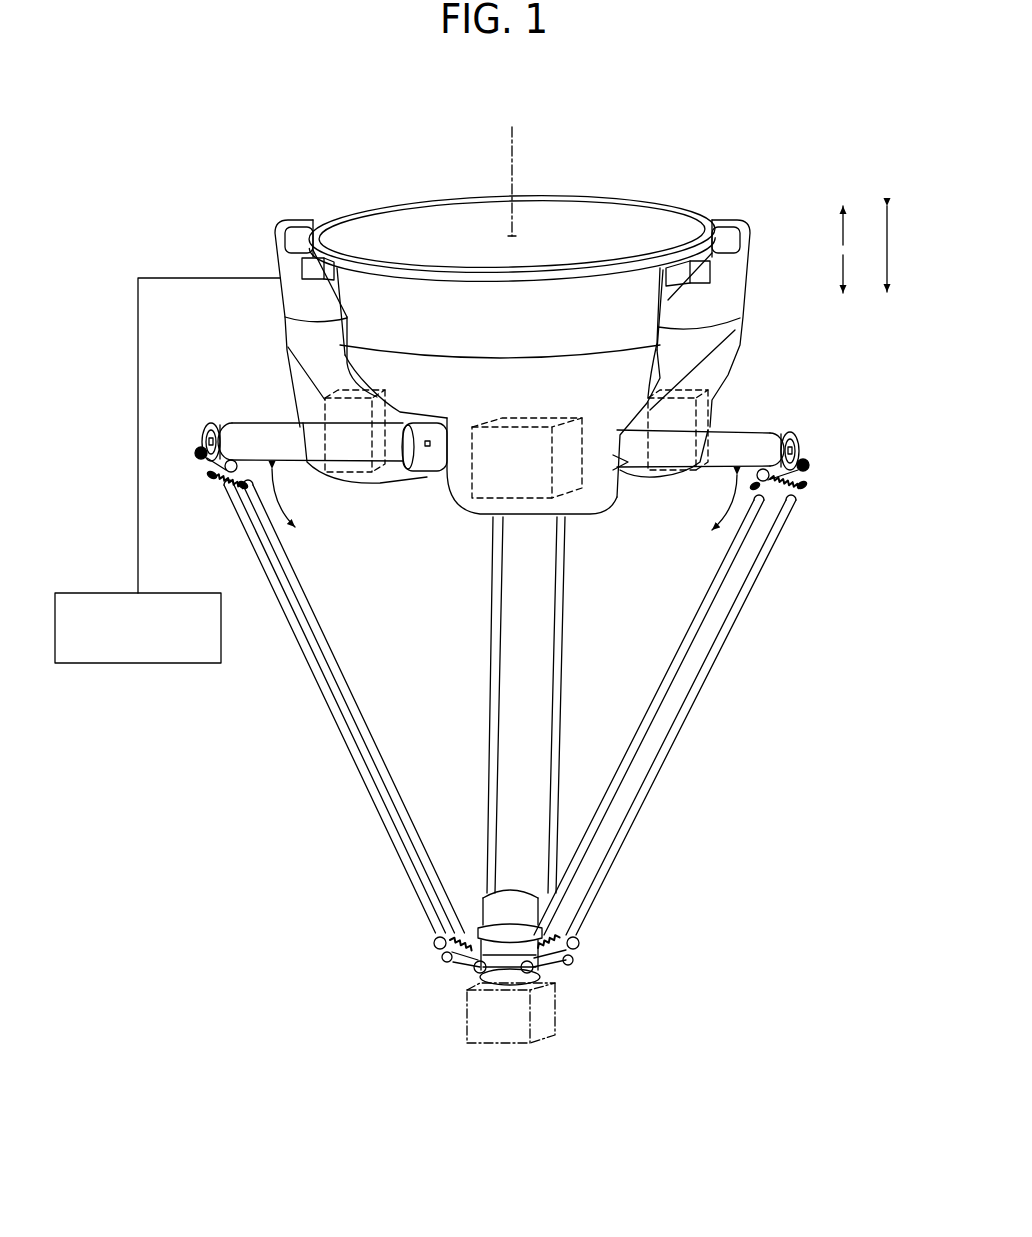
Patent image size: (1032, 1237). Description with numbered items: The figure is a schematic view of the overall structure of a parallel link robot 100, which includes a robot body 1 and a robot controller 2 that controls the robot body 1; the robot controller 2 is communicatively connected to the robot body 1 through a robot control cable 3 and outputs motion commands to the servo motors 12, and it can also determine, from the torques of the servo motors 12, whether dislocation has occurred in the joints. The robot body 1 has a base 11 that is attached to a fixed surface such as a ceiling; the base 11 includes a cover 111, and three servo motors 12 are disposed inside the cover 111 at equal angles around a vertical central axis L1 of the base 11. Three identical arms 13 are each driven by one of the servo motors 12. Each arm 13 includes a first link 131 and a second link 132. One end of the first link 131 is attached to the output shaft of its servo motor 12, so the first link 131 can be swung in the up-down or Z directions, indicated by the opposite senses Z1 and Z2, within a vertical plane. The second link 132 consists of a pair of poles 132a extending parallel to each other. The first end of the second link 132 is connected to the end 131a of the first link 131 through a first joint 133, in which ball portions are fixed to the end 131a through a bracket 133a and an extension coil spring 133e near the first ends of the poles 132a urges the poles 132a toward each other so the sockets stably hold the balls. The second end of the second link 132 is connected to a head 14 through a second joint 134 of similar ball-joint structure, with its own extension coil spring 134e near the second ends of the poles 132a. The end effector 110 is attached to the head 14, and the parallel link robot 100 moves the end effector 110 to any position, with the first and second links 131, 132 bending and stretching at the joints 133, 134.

The parallel link robot 100 is at (652, 127).
The robot body 1 is at (765, 223).
The robot controller 2 is at (131, 665).
The robot control cable 3 is at (188, 277).
The base 11 is at (467, 212).
The cover 111 is at (710, 337).
The servo motor 12 is at (352, 473).
The arm 13 is at (592, 562).
The first link 131 is at (283, 427).
The end of first link 131a is at (212, 428).
The second link 132 is at (404, 595).
The pole 132a is at (495, 589).
The first joint 133 is at (192, 469).
The bracket 133a is at (225, 423).
The extension coil spring 133e is at (214, 484).
The second joint 134 is at (446, 968).
The extension coil spring 134e is at (437, 931).
The head 14 is at (508, 903).
The end effector 110 is at (545, 1042).
The central axis L1 is at (513, 137).
The Z directions Z is at (897, 249).
The Z1 direction Z1 is at (857, 226).
The Z2 direction Z2 is at (857, 274).